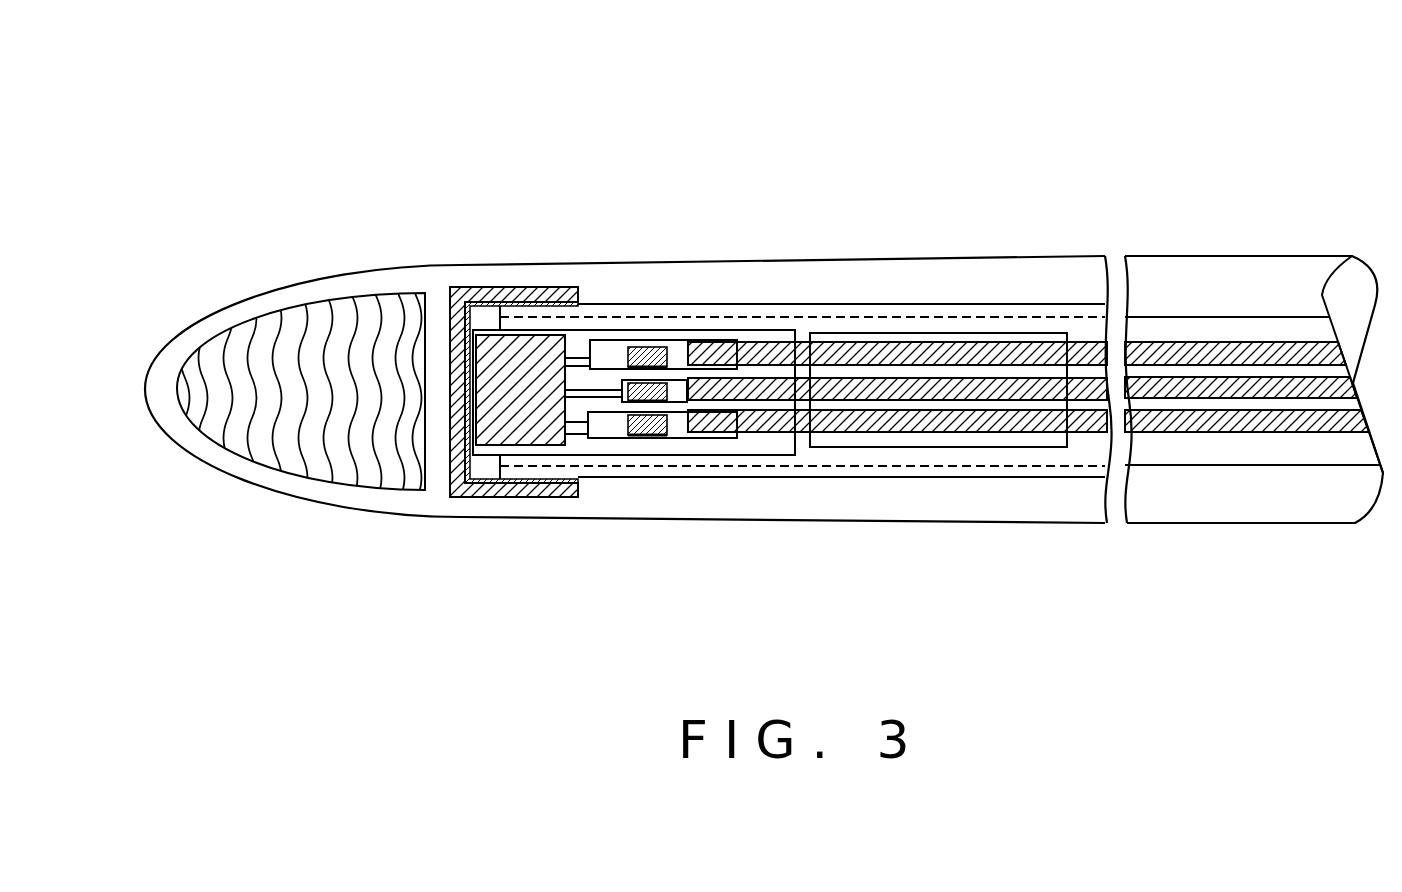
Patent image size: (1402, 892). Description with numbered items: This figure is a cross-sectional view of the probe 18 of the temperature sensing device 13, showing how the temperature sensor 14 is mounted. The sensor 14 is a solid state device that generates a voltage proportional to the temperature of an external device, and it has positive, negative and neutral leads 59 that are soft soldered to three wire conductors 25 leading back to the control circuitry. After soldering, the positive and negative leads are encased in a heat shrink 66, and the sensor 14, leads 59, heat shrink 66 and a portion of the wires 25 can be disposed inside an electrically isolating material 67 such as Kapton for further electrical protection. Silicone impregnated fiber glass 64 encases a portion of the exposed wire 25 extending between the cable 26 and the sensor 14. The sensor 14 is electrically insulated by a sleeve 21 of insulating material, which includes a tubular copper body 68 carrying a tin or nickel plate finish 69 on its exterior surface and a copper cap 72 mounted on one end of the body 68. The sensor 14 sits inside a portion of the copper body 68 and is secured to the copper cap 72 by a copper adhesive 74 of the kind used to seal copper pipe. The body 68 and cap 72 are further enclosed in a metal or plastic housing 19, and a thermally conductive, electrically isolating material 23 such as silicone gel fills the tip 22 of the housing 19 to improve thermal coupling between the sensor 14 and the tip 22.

The temperature sensing device 13 is at (318, 107).
The temperature sensor 14 is at (541, 340).
The probe 18 is at (1187, 228).
The housing 19 is at (490, 250).
The sleeve 21 is at (708, 292).
The tip 22 is at (143, 403).
The thermally conductive, electrically isolating material 23 is at (283, 347).
The wire conductors 25 is at (1053, 405).
The cable 26 is at (1233, 317).
The leads 59 is at (610, 427).
The silicone impregnated fiber glass 64 is at (1043, 448).
The heat shrink 66 is at (615, 340).
The electrically isolating material 67 is at (795, 453).
The tubular copper body 68 is at (832, 316).
The plate finish 69 is at (937, 304).
The copper cap 72 is at (448, 297).
The copper adhesive 74 is at (450, 420).